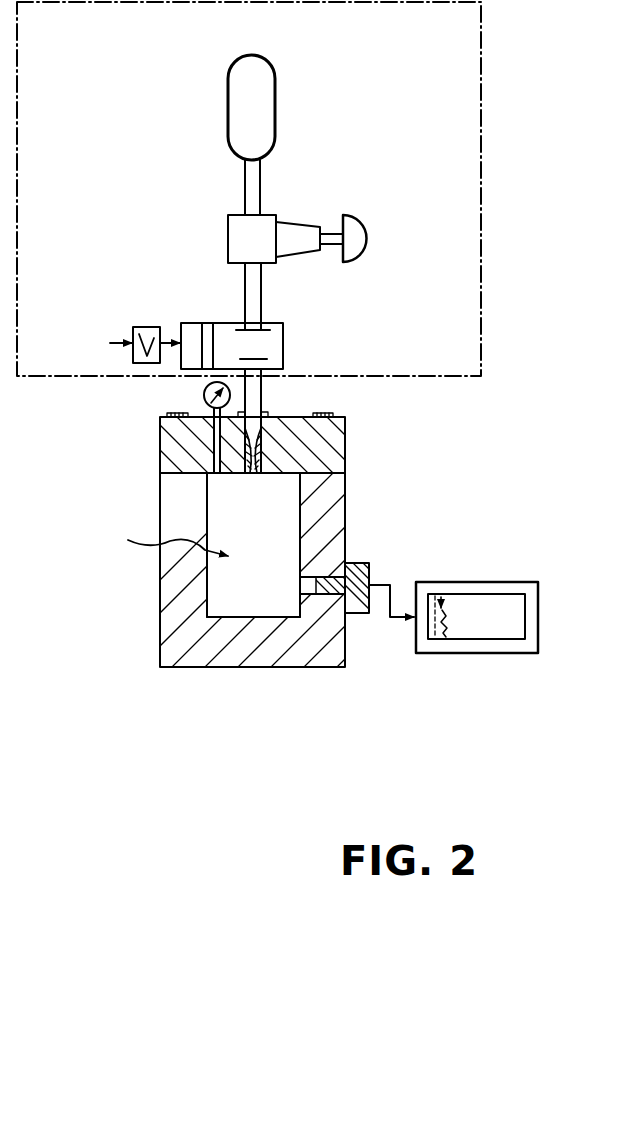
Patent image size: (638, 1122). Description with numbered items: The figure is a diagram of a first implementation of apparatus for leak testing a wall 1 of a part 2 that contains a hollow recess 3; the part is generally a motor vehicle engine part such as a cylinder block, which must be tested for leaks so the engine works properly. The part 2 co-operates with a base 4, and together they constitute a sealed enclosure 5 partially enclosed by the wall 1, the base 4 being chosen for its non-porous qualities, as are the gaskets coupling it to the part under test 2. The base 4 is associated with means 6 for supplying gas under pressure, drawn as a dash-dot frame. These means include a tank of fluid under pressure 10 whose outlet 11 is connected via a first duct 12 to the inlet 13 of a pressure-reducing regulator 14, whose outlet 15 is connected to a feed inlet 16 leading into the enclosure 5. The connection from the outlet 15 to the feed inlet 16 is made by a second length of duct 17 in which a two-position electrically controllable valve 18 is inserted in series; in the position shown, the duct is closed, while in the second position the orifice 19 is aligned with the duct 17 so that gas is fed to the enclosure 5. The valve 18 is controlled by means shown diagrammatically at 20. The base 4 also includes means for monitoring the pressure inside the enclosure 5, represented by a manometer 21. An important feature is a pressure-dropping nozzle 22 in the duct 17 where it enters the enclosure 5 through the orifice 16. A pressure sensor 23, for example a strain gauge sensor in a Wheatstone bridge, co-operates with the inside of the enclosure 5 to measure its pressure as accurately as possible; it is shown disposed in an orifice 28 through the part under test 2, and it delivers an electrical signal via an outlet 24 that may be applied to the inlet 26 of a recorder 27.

The wall 1 is at (206, 572).
The part 2 is at (158, 621).
The hollow recess 3 is at (237, 600).
The base 4 is at (185, 440).
The sealed enclosure 5 is at (169, 540).
The means for supplying gas under pressure 6 is at (426, 54).
The tank of fluid under pressure 10 is at (262, 118).
The outlet 11 is at (255, 166).
The first duct 12 is at (252, 187).
The inlet 13 is at (255, 205).
The pressure-reducing regulator 14 is at (252, 230).
The outlet 15 is at (252, 266).
The feed inlet 16 is at (253, 475).
The second length of duct 17 is at (257, 397).
The two-position electrically controllable valve 18 is at (273, 347).
The orifice 19 is at (210, 341).
The control means 20 is at (147, 346).
The manometer 21 is at (202, 391).
The pressure-dropping nozzle 22 is at (249, 474).
The pressure sensor 23 is at (395, 540).
The outlet 24 is at (372, 582).
The inlet 26 is at (411, 620).
The recorder 27 is at (476, 620).
The orifice 28 is at (297, 583).